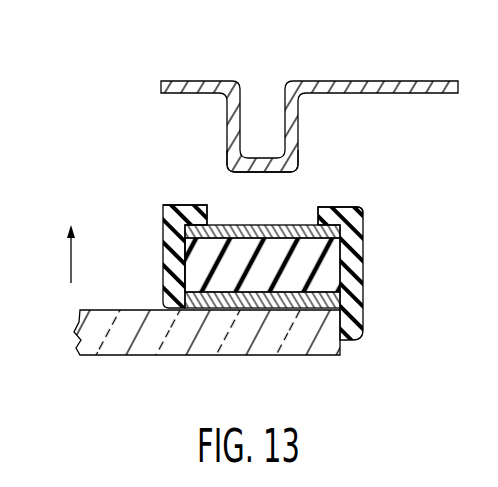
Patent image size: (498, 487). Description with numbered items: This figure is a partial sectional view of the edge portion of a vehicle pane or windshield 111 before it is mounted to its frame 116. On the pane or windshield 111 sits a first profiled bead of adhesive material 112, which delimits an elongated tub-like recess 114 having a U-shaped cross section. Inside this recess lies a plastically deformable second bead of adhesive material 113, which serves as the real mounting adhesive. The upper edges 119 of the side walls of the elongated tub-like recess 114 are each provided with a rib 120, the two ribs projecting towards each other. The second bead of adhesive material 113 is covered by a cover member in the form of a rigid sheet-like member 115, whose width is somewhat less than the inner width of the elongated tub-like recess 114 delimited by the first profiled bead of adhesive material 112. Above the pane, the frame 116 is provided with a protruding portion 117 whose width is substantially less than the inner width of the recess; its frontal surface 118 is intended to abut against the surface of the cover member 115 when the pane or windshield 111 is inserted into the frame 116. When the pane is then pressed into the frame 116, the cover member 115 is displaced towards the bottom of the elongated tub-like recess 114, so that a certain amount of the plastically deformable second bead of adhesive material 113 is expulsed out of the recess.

The pane or windshield 111 is at (127, 338).
The first profiled bead of adhesive material 112 is at (382, 310).
The plastically deformable second bead of adhesive material 113 is at (323, 268).
The elongated tub-like recess 114 is at (192, 270).
The rigid sheet-like member 115 is at (283, 228).
The frame 116 is at (366, 68).
The protruding portion 117 is at (263, 118).
The frontal surface 118 is at (262, 172).
The upper edges 119 is at (164, 207).
The rib 120 is at (176, 208).